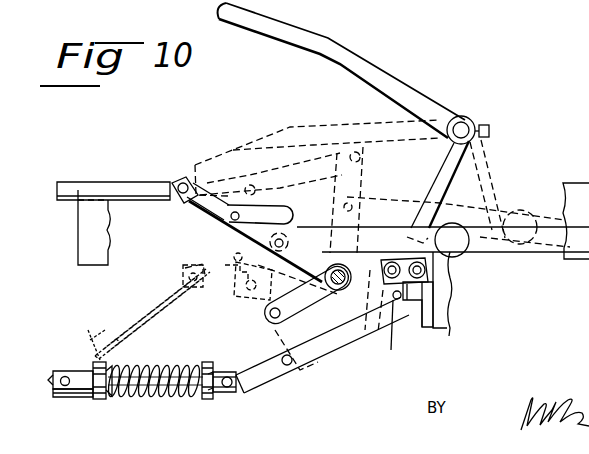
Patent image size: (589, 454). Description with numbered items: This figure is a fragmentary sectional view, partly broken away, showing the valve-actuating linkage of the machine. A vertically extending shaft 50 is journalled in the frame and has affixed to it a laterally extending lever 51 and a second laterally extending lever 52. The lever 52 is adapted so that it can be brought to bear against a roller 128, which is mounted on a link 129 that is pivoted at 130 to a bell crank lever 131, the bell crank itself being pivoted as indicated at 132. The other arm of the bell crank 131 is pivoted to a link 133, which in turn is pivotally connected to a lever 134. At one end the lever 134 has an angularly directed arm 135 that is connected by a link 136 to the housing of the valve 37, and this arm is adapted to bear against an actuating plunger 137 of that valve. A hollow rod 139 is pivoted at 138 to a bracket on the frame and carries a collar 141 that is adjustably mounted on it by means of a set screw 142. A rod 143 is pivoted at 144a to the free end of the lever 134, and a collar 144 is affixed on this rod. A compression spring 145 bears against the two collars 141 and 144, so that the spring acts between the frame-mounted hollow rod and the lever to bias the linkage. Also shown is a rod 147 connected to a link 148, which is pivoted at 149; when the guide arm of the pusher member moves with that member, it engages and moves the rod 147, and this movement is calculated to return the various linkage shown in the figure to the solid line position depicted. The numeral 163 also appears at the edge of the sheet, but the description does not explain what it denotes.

The valve 37 is at (449, 336).
The vertically extending shaft 50 is at (470, 118).
The laterally extending lever 51 is at (374, 80).
The laterally extending lever 52 is at (437, 172).
The roller 128 is at (466, 252).
The link 129 is at (553, 248).
The pivot 130 is at (259, 242).
The bell crank lever 131 is at (246, 298).
The pivot 132 is at (354, 277).
The link 133 is at (307, 302).
The lever 134 is at (325, 352).
The angularly directed arm 135 is at (391, 350).
The link 136 is at (403, 262).
The actuating plunger 137 is at (415, 317).
The pivot 138 is at (61, 396).
The hollow rod 139 is at (84, 397).
The collar 141 is at (102, 400).
The set screw 142 is at (100, 378).
The rod 143 is at (218, 373).
The collar 144 is at (208, 400).
The pivot 144a is at (233, 393).
The compression spring 145 is at (145, 398).
The rod 147 is at (118, 182).
The link 148 is at (203, 204).
The pivot 149 is at (216, 228).
The seat 163 is at (578, 19).